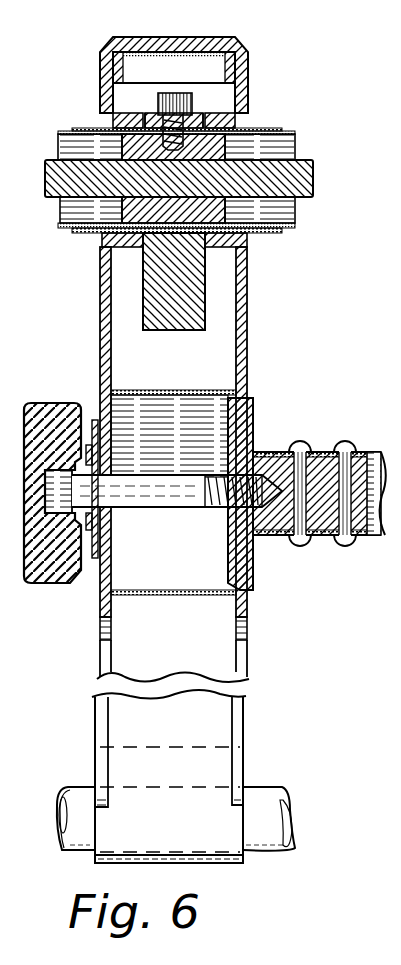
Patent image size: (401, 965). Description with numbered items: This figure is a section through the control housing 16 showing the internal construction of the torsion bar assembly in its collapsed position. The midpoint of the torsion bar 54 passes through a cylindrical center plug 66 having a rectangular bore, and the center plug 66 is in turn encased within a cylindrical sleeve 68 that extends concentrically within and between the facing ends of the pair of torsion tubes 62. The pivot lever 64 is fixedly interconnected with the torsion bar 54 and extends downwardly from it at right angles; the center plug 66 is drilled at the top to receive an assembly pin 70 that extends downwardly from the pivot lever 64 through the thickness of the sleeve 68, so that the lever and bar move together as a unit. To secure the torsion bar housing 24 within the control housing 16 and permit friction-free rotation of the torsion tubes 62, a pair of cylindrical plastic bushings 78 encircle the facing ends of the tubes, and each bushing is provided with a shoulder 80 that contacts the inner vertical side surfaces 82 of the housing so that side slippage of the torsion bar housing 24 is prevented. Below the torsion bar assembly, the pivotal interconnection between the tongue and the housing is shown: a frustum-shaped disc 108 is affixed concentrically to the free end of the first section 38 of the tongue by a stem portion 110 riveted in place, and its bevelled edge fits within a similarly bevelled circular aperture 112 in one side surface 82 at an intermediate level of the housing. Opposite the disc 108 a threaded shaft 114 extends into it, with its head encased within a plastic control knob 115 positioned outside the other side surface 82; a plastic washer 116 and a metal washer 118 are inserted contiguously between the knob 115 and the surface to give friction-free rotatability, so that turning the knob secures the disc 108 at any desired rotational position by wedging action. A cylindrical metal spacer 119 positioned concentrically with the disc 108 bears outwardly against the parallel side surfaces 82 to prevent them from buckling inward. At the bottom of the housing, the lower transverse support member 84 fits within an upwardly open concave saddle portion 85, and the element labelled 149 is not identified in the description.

The control housing 16 is at (255, 70).
The assembly pin 70 is at (172, 100).
The cylindrical plastic bushings 78 is at (130, 116).
The shoulder 80 is at (110, 116).
The torsion bar housing 24 is at (299, 144).
The torsion bar 54 is at (312, 174).
The center plug 66 is at (140, 204).
The cylindrical sleeve 68 is at (288, 228).
The torsion tubes 62 is at (84, 233).
The pivot lever 64 is at (181, 318).
The inner vertical side surfaces 82 is at (108, 326).
The seal 149 is at (240, 410).
The frustum-shaped disc 108 is at (247, 432).
The bevelled circular aperture 112 is at (256, 572).
The stem portion 110 is at (323, 533).
The first section of the tongue 38 is at (374, 462).
The threaded shaft 114 is at (168, 503).
The plastic control knob 115 is at (60, 408).
The plastic washer 116 is at (104, 518).
The metal washer 118 is at (98, 548).
The cylindrical metal spacer 119 is at (200, 596).
The lower transverse support member 84 is at (86, 798).
The saddle portion 85 is at (145, 745).